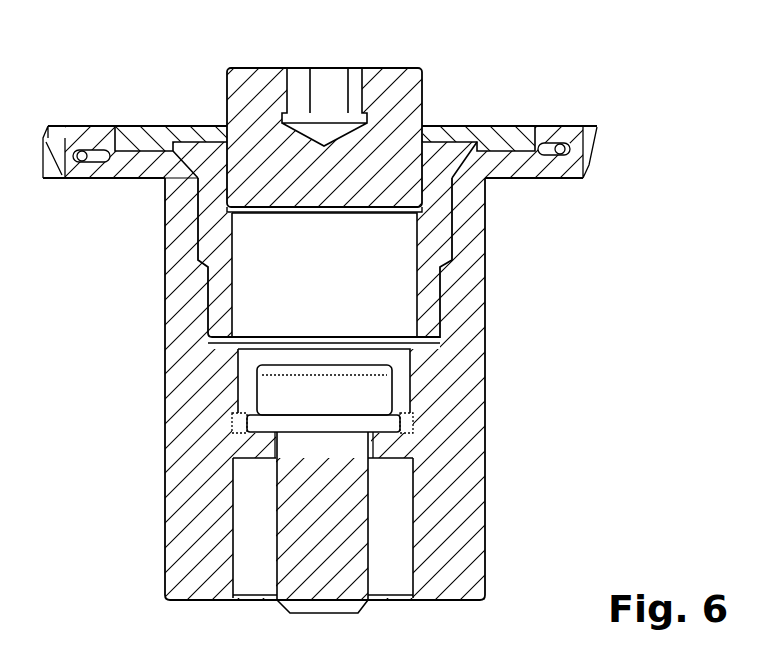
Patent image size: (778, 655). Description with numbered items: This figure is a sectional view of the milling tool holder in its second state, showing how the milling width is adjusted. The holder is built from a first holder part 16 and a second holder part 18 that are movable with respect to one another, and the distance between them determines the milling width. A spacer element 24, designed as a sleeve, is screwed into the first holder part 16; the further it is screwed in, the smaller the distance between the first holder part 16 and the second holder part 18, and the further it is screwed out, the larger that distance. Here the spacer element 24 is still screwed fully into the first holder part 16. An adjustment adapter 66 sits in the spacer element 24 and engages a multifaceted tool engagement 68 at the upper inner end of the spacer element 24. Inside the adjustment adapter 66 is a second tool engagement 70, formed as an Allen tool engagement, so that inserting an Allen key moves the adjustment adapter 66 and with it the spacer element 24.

The first holder part 16 is at (465, 393).
The second holder part 18 is at (518, 140).
The spacer element 24 is at (443, 230).
The adjustment adapter 66 is at (402, 98).
The tool engagement 68 is at (166, 198).
The second tool engagement 70 is at (328, 88).